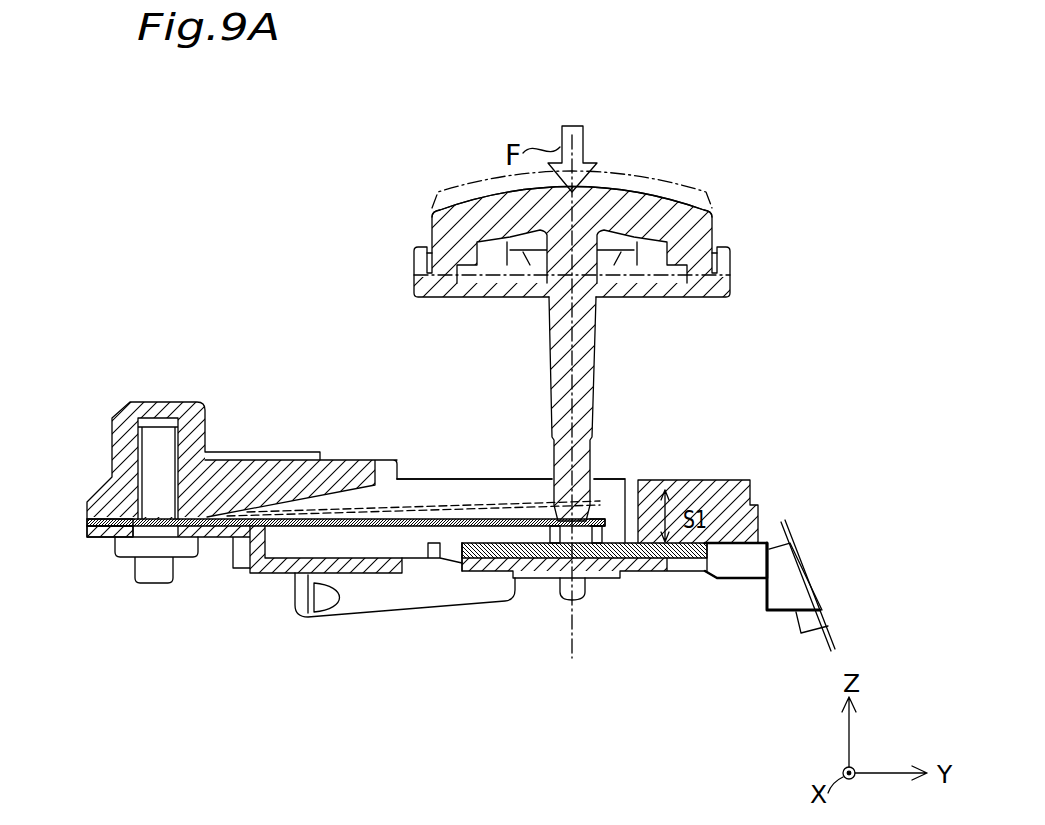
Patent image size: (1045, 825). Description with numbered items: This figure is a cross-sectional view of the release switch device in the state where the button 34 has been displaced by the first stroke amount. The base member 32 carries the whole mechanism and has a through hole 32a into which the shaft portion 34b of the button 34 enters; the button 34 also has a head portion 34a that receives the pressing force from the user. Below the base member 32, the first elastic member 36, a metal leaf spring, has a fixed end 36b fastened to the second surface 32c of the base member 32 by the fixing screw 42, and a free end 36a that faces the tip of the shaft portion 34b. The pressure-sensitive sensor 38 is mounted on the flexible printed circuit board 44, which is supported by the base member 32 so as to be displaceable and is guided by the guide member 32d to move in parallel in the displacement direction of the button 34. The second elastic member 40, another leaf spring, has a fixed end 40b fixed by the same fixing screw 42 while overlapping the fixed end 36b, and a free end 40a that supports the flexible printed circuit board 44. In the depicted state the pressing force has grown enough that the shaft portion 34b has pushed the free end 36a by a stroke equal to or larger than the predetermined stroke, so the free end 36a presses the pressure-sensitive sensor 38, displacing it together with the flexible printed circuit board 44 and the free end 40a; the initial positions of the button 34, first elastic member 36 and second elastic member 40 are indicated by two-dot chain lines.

The base member 32 is at (720, 480).
The through hole 32a is at (445, 479).
The second surface 32c is at (730, 548).
The guide member 32d is at (559, 590).
The button 34 is at (432, 247).
The head portion 34a is at (712, 238).
The shaft portion 34b is at (590, 397).
The first elastic member 36 is at (488, 519).
The free end 36a is at (598, 521).
The fixed end 36b is at (87, 521).
The pressure-sensitive sensor 38 is at (555, 521).
The second elastic member 40 is at (383, 573).
The free end 40a is at (614, 567).
The fixed end 40b is at (98, 538).
The fixing screw 42 is at (150, 450).
The flexible printed circuit board 44 is at (463, 563).